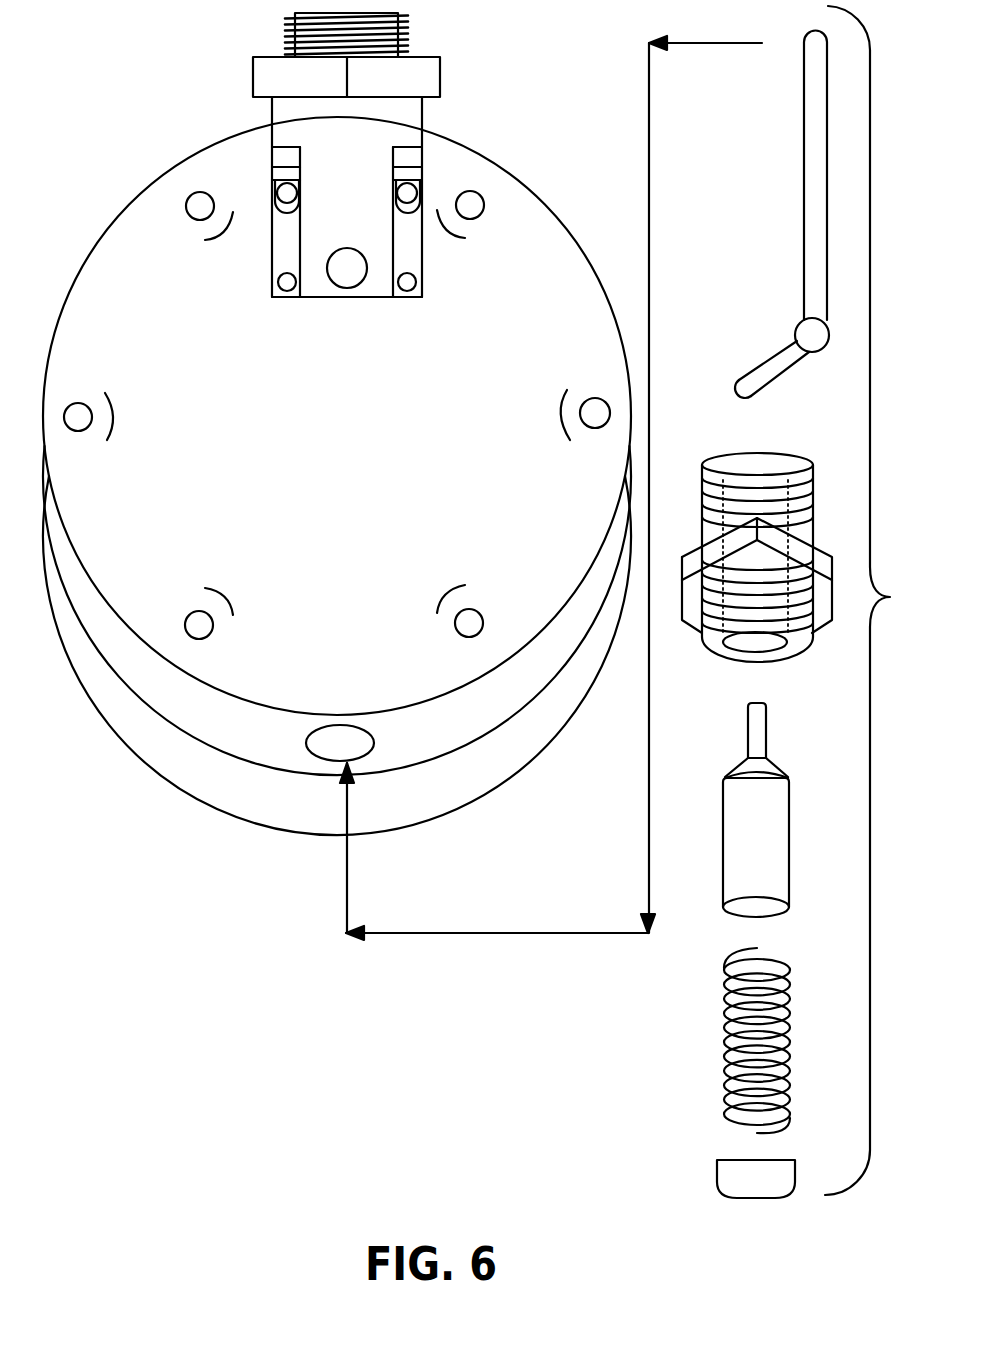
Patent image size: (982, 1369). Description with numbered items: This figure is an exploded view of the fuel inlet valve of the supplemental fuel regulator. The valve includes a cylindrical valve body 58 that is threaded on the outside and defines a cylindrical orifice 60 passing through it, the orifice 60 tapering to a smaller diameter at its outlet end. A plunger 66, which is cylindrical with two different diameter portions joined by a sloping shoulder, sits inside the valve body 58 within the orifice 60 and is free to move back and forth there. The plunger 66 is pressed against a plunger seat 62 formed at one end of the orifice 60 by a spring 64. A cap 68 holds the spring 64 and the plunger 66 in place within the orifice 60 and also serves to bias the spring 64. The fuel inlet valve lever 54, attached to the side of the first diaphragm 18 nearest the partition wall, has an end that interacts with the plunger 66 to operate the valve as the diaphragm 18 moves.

The first diaphragm 18 is at (163, 258).
The fuel inlet valve lever 54 is at (812, 63).
The cylindrical valve body 58 is at (702, 473).
The plunger seat 62 is at (760, 447).
The cylindrical orifice 60 is at (755, 643).
The plunger 66 is at (790, 842).
The spring 64 is at (790, 1013).
The cap 68 is at (797, 1172).